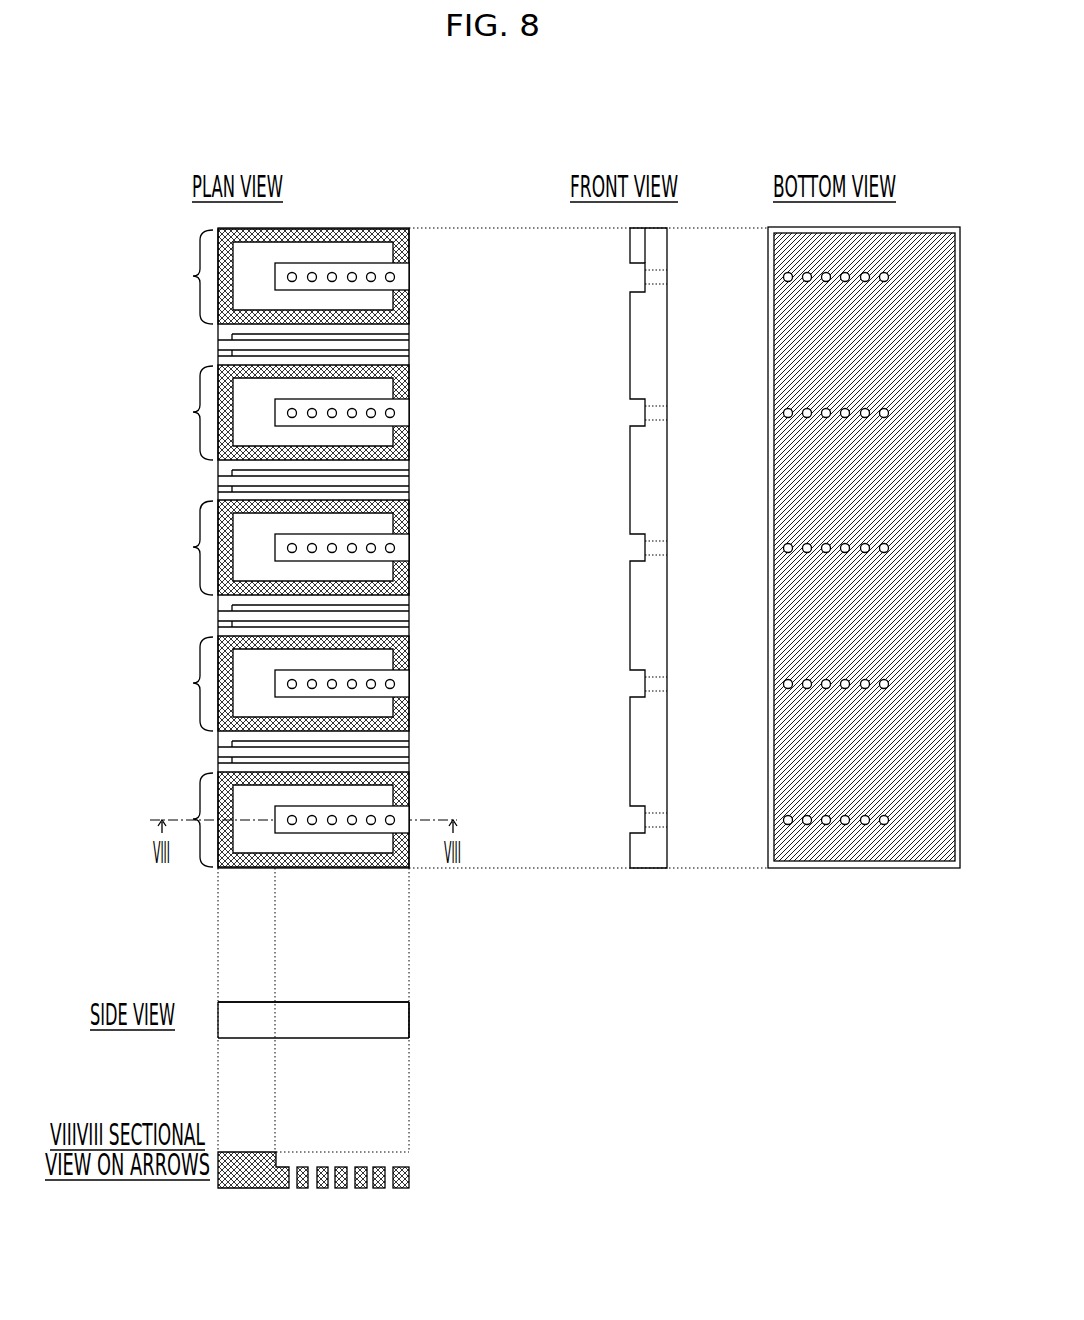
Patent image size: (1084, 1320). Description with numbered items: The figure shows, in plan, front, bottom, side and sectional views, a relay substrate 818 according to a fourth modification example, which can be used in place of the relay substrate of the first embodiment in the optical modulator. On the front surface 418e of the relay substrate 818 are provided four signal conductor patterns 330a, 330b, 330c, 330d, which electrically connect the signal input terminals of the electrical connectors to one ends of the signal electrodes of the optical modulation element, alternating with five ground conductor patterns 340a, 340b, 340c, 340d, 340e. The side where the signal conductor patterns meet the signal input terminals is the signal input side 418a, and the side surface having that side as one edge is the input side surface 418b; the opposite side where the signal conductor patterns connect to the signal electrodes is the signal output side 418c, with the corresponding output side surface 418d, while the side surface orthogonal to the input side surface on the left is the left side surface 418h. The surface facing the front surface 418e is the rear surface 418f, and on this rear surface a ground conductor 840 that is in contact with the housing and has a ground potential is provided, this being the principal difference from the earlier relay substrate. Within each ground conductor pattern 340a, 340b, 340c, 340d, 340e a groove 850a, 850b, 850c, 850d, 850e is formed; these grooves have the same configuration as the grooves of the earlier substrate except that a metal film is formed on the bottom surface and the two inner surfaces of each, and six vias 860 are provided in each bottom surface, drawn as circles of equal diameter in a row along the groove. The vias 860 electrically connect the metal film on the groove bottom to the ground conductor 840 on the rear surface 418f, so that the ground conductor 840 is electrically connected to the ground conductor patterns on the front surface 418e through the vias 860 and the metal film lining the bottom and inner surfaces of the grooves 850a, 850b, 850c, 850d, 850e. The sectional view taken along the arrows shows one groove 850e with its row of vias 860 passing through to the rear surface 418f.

The relay substrate 818 is at (452, 116).
The signal input side 418a is at (409, 1002).
The input side surface 418b is at (409, 851).
The signal output side 418c is at (218, 1002).
The output side surface 418d is at (218, 851).
The front surface 418e is at (343, 250).
The rear surface 418f is at (667, 437).
The left side surface 418h is at (653, 870).
The ground conductor pattern 340a is at (268, 276).
The ground conductor pattern 340b is at (268, 412).
The ground conductor pattern 340c is at (268, 547).
The ground conductor pattern 340d is at (268, 683).
The ground conductor pattern 340e is at (268, 819).
The signal conductor pattern 330a is at (221, 345).
The signal conductor pattern 330b is at (221, 481).
The signal conductor pattern 330c is at (221, 616).
The signal conductor pattern 330d is at (221, 752).
The groove 850a is at (410, 277).
The groove 850b is at (410, 413).
The groove 850c is at (410, 548).
The groove 850d is at (410, 684).
The groove 850e is at (410, 820).
The via 860 is at (392, 276).
The ground conductor 840 is at (842, 848).